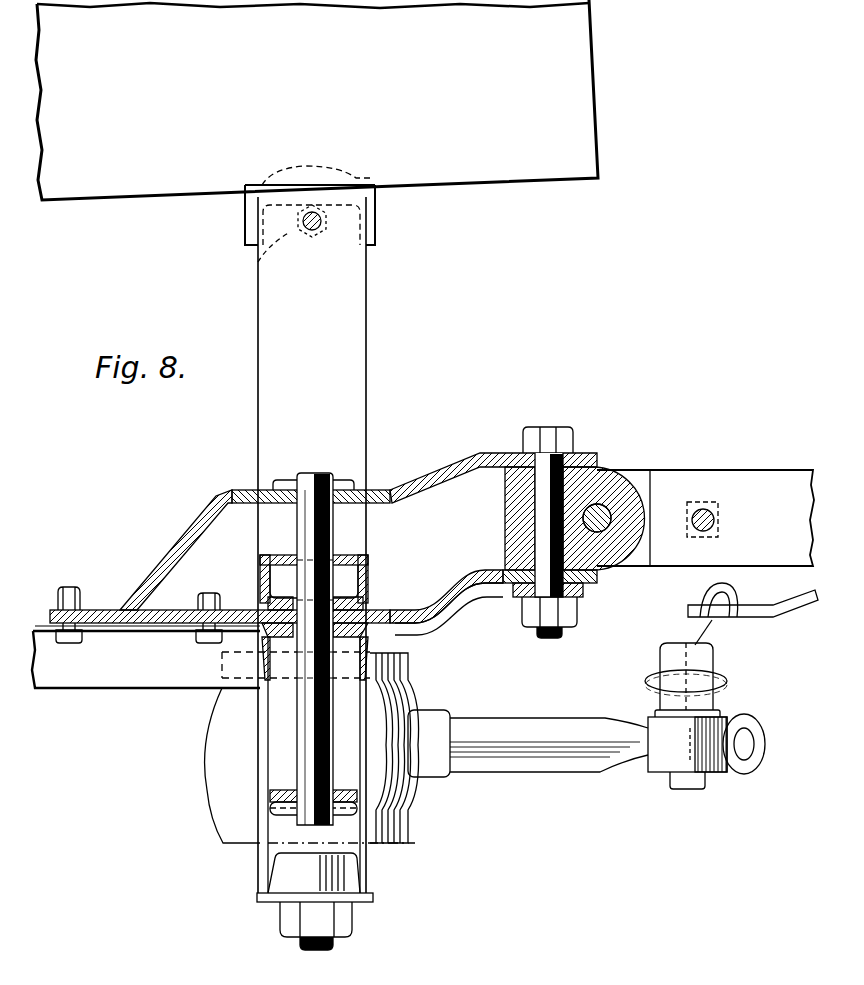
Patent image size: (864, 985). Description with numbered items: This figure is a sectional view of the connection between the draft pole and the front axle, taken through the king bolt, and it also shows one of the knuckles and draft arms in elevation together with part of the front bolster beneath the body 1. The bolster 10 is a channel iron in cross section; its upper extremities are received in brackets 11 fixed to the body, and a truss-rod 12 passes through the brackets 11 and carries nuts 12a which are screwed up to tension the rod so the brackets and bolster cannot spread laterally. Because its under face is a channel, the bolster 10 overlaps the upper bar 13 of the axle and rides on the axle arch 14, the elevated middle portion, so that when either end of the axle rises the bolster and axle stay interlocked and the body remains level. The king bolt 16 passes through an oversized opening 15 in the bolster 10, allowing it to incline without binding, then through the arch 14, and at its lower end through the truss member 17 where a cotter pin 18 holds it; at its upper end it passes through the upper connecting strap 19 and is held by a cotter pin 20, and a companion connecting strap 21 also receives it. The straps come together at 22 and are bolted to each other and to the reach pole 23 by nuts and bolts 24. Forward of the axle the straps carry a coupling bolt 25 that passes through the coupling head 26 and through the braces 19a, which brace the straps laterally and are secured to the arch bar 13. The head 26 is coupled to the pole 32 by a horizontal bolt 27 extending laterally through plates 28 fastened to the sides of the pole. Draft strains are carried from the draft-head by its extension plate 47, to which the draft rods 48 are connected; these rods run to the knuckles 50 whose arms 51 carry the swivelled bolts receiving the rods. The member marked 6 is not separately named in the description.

The frame plate 1 is at (585, 62).
The bracket member 6 is at (493, 522).
The bolster 10 is at (366, 371).
The brackets 11 is at (245, 217).
The truss-rod 12 is at (310, 231).
The nuts 12a is at (250, 258).
The upper bar of the axle 13 is at (345, 600).
The axle arch 14 is at (265, 653).
The opening 15 is at (332, 553).
The king bolt 16 is at (298, 473).
The truss member 17 is at (270, 797).
The cotter pin 18 is at (270, 810).
The upper connecting strap 19 is at (410, 482).
The braces 19a is at (495, 592).
The cotter pin 20 is at (345, 478).
The companion connecting strap 21 is at (477, 572).
The junction of connecting straps 22 is at (108, 608).
The reach pole 23 is at (115, 688).
The nuts and bolts 24 is at (68, 586).
The coupling bolt 25 is at (518, 455).
The coupling head 26 is at (505, 488).
The horizontal bolt 27 is at (601, 500).
The plates 28 is at (640, 478).
The pole 32 is at (800, 480).
The plate 47 is at (798, 617).
The draft rods 48 is at (690, 633).
The knuckles 50 is at (410, 690).
The arms 51 is at (603, 727).